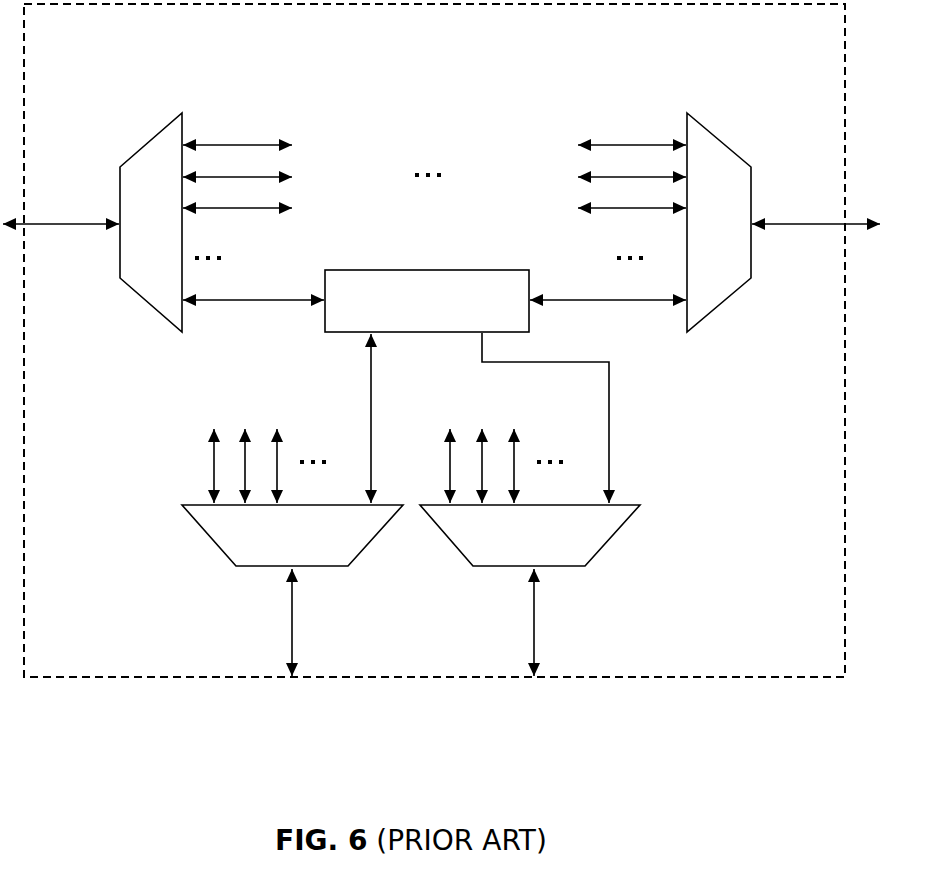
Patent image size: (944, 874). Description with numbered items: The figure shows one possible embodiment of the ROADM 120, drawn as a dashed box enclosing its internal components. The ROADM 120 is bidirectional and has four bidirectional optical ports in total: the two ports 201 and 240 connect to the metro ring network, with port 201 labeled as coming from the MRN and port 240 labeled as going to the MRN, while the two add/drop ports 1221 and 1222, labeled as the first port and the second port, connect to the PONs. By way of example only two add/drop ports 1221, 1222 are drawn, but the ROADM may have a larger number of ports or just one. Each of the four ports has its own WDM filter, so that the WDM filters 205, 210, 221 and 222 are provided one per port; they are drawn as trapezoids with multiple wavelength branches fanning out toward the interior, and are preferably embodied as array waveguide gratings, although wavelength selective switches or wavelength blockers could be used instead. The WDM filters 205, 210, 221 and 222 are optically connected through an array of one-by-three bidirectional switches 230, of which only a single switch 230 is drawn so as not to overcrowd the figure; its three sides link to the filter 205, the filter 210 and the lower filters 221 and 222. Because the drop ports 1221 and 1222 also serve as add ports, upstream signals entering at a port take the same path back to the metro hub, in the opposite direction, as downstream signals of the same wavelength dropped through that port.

The ROADM 120 is at (434, 340).
The port 201 is at (90, 226).
The WDM filter 205 is at (140, 294).
The WDM filter 210 is at (708, 127).
The 1×3 bidirectional switch 230 is at (436, 268).
The port 240 is at (830, 222).
The WDM filter 221 is at (190, 512).
The WDM filter 222 is at (630, 520).
The add/drop port 1221 is at (293, 627).
The add/drop port 1222 is at (535, 625).